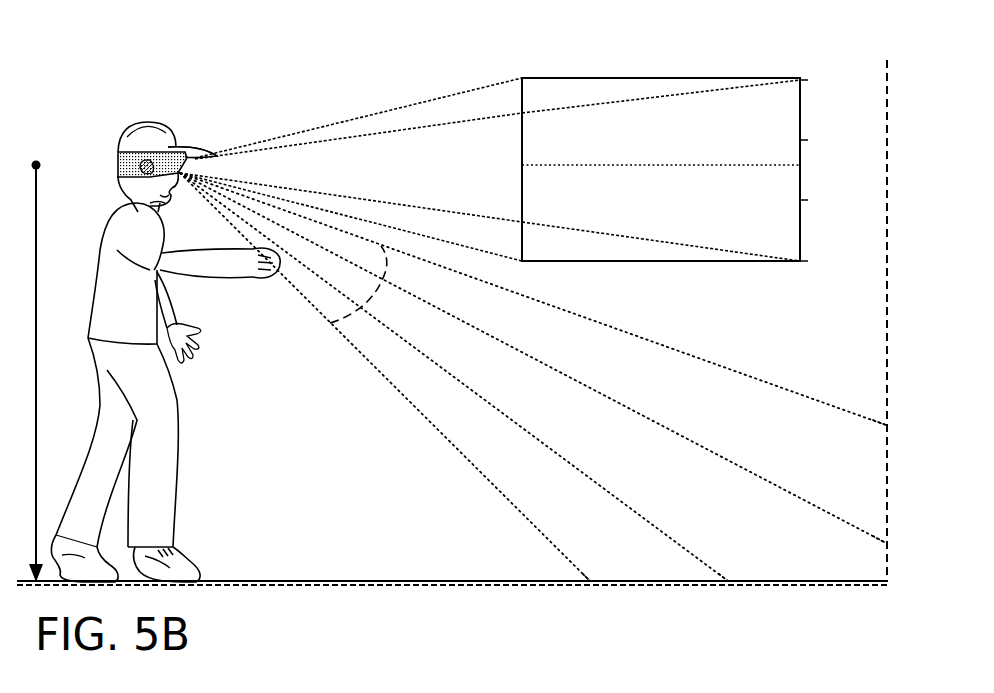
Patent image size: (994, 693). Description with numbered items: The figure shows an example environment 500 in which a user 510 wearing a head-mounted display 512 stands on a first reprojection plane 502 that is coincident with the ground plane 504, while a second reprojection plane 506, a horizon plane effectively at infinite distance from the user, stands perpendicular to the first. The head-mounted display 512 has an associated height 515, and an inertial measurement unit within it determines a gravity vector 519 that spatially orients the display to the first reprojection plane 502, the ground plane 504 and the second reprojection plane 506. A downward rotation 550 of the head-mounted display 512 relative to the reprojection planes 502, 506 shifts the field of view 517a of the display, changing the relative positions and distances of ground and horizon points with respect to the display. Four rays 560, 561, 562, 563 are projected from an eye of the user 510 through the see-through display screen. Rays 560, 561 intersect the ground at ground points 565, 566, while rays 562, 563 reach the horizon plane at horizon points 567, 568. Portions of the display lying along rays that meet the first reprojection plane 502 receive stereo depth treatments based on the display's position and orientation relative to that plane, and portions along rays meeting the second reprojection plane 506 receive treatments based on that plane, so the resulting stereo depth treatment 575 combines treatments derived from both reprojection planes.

The environment 500 is at (122, 48).
The first reprojection plane 502 is at (265, 585).
The ground plane 504 is at (227, 581).
The second reprojection plane 506 is at (888, 256).
The user 510 is at (140, 326).
The head-mounted display 512 is at (190, 168).
The height 515 is at (42, 165).
The field of view 517a is at (387, 272).
The gravity vector 519 is at (37, 372).
The downward rotation 550 is at (214, 138).
The ray 560 is at (518, 510).
The ray 561 is at (597, 483).
The ray 562 is at (660, 426).
The ray 563 is at (655, 347).
The ground point 565 is at (590, 585).
The ground point 566 is at (728, 585).
The horizon point 567 is at (888, 543).
The horizon point 568 is at (889, 426).
The stereo depth treatment 575 is at (567, 254).